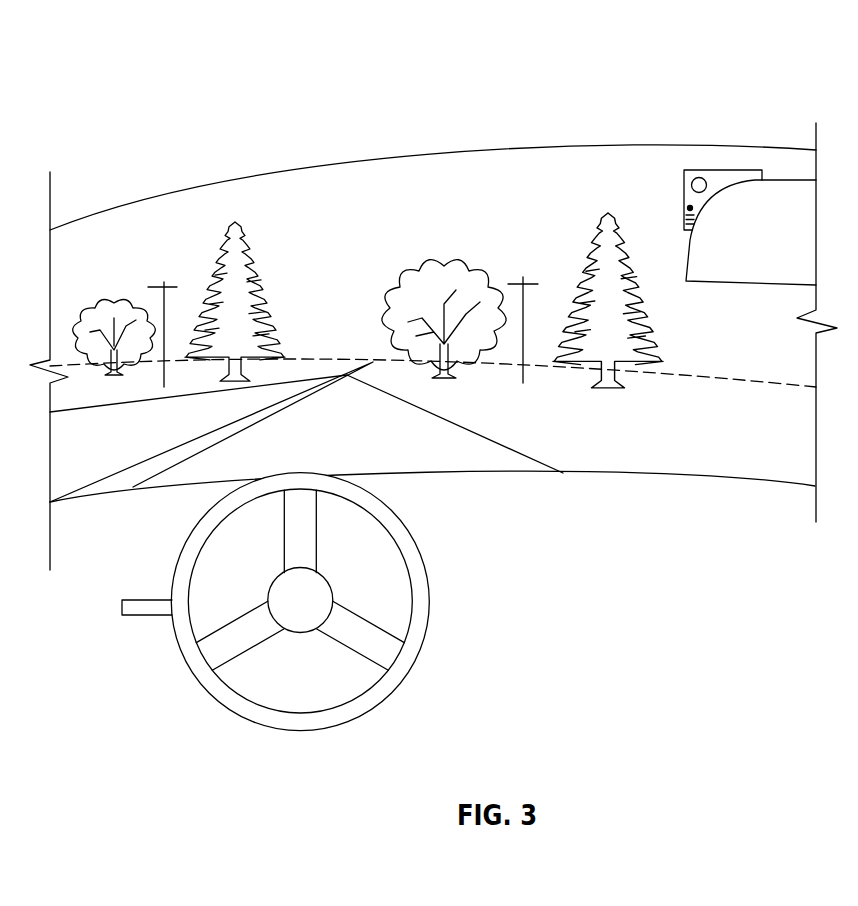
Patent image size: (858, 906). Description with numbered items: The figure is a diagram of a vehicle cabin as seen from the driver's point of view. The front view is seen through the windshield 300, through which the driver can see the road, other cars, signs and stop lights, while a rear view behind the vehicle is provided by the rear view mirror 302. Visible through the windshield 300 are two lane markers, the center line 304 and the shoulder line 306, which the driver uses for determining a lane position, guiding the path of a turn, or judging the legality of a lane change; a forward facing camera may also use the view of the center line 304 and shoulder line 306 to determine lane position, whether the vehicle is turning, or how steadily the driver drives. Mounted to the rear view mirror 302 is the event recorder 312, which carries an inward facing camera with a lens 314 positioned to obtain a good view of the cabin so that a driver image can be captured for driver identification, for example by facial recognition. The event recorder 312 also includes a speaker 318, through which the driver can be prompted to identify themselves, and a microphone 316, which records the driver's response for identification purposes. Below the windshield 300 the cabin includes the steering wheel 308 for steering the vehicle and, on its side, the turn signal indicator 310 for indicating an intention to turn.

The windshield 300 is at (362, 170).
The rear view mirror 302 is at (760, 263).
The center line 304 is at (257, 422).
The shoulder line 306 is at (463, 425).
The steering wheel 308 is at (427, 578).
The turn signal indicator 310 is at (142, 617).
The event recorder 312 is at (716, 190).
The lens 314 is at (693, 186).
The microphone 316 is at (687, 207).
The speaker 318 is at (683, 221).